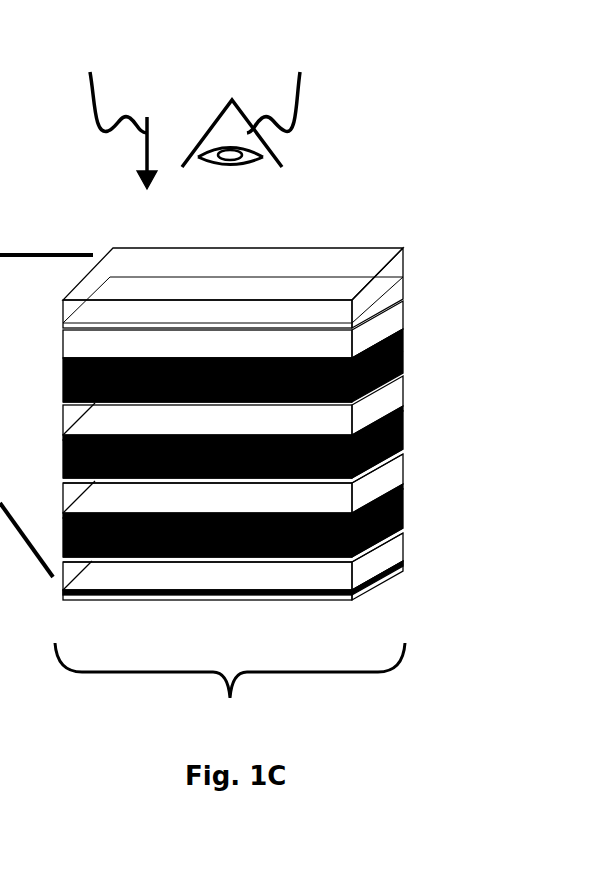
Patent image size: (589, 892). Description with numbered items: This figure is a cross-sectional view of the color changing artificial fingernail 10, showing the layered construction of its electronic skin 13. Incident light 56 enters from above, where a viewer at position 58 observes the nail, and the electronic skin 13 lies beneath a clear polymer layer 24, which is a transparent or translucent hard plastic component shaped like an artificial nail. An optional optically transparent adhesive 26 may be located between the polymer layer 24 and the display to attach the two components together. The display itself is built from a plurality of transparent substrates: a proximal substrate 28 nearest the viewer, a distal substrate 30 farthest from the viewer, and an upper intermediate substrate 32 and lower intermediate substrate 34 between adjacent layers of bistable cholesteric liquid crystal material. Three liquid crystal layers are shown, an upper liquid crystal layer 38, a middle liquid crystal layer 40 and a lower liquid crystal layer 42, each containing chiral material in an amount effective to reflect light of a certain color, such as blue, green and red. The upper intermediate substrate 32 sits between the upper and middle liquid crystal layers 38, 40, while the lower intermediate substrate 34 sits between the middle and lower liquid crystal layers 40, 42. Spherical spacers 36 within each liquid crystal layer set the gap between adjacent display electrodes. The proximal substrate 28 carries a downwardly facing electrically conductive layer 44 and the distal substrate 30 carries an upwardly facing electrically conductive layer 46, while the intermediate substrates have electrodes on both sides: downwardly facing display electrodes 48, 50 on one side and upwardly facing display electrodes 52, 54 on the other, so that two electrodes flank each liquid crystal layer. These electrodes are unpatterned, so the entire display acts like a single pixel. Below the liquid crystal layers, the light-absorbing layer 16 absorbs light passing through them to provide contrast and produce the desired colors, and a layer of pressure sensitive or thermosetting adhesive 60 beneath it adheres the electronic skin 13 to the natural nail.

The color changing artificial fingernail 10 is at (37, 40).
The electronic skin 13 is at (230, 690).
The light-absorbing layer 16 is at (405, 542).
The clear polymer layer 24 is at (245, 265).
The optical adhesive 26 is at (395, 300).
The proximal substrate 28 is at (400, 330).
The distal substrate 30 is at (405, 530).
The upper intermediate substrate 32 is at (403, 368).
The lower intermediate substrate 34 is at (403, 448).
The spherical spacers 36 is at (317, 535).
The upper liquid crystal layer 38 is at (400, 365).
The middle liquid crystal layer 40 is at (403, 408).
The lower liquid crystal layer 42 is at (403, 492).
The downwardly facing electrically conductive layer 44 is at (400, 355).
The upwardly facing electrically conductive layer 46 is at (405, 510).
The downwardly facing display electrode 48 is at (405, 387).
The downwardly facing display electrode 50 is at (403, 463).
The upwardly facing display electrode 52 is at (405, 430).
The upwardly facing display electrode 54 is at (405, 353).
The incident light 56 is at (116, 115).
The viewer position 58 is at (249, 104).
The adhesive layer 60 is at (405, 553).